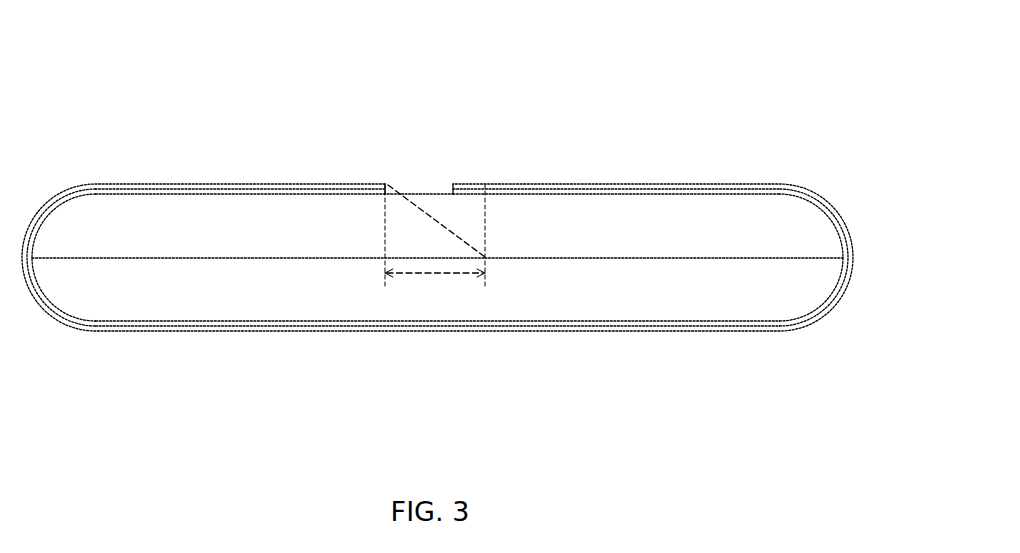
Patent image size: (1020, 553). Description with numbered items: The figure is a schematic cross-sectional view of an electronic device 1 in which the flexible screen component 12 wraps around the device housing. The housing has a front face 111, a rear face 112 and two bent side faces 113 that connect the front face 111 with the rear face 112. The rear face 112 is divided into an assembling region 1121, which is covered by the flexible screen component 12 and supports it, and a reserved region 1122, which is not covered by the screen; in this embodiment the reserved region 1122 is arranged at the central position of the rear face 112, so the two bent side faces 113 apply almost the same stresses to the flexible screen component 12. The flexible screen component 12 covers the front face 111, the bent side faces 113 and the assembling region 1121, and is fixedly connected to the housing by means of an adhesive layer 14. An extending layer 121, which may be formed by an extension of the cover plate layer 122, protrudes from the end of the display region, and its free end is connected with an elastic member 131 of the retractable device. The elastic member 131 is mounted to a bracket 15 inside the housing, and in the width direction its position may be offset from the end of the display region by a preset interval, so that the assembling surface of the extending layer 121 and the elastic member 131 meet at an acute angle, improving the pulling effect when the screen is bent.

The electronic device 1 is at (125, 61).
The flexible screen component 12 is at (438, 144).
The extending layer 121 is at (412, 203).
The cover plate layer 122 is at (355, 185).
The elastic member 131 is at (480, 255).
The adhesive layer 14 is at (153, 193).
The bracket 15 is at (440, 193).
The front face 111 is at (275, 321).
The rear face 112 is at (437, 310).
The assembling region 1121 is at (565, 193).
The reserved region 1122 is at (497, 258).
The bent side face 113 is at (36, 277).